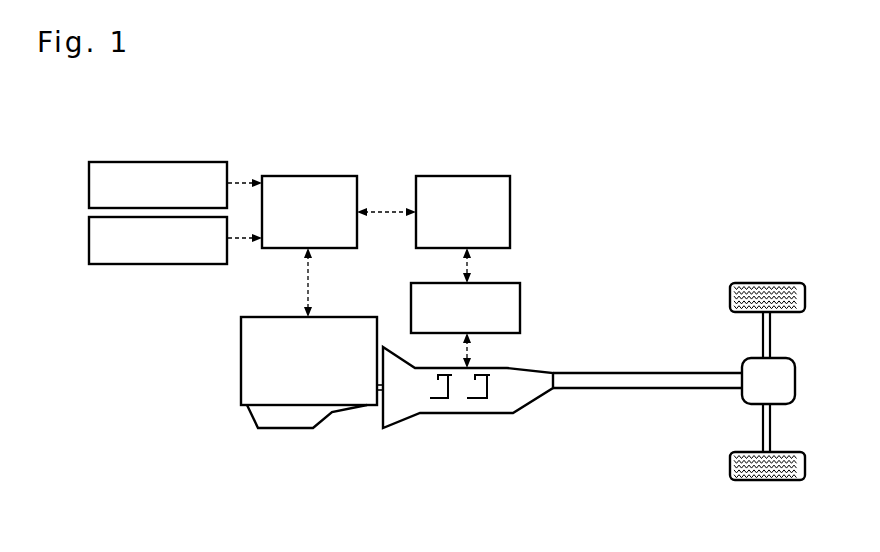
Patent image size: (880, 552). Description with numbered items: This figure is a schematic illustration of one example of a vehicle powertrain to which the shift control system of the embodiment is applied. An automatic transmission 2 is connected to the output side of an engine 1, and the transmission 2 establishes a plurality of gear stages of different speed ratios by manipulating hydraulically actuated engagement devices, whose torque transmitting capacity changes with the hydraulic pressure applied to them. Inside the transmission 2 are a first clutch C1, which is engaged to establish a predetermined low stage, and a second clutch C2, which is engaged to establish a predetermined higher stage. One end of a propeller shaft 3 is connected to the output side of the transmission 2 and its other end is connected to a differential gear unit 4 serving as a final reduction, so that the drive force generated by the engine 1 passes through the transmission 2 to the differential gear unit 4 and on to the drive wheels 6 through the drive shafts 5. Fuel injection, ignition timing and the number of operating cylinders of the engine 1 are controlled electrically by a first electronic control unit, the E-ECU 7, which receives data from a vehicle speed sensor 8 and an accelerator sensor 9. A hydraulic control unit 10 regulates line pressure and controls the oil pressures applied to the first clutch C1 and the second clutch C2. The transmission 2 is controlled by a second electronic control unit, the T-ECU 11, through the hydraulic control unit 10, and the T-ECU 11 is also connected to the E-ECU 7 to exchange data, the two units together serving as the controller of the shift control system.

The engine 1 is at (340, 317).
The automatic transmission 2 is at (502, 368).
The propeller shaft 3 is at (657, 373).
The differential gear unit 4 is at (795, 378).
The drive shaft 5 is at (772, 322).
The drive wheel 6 is at (770, 283).
The first electronic control unit (E-ECU) 7 is at (317, 176).
The vehicle speed sensor 8 is at (159, 162).
The accelerator sensor 9 is at (161, 264).
The hydraulic control unit 10 is at (521, 310).
The second electronic control unit (T-ECU) 11 is at (462, 176).
The first clutch C1 is at (432, 382).
The second clutch C2 is at (492, 380).